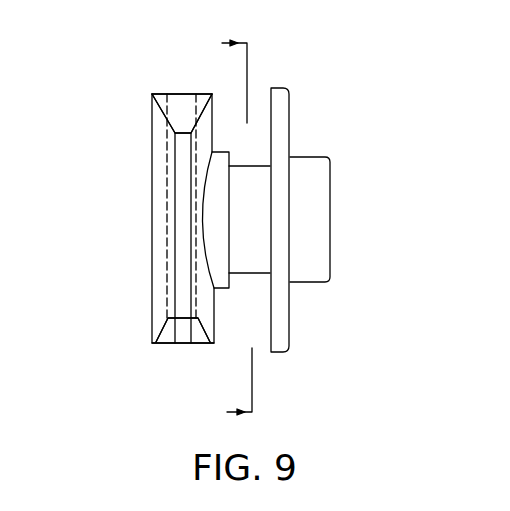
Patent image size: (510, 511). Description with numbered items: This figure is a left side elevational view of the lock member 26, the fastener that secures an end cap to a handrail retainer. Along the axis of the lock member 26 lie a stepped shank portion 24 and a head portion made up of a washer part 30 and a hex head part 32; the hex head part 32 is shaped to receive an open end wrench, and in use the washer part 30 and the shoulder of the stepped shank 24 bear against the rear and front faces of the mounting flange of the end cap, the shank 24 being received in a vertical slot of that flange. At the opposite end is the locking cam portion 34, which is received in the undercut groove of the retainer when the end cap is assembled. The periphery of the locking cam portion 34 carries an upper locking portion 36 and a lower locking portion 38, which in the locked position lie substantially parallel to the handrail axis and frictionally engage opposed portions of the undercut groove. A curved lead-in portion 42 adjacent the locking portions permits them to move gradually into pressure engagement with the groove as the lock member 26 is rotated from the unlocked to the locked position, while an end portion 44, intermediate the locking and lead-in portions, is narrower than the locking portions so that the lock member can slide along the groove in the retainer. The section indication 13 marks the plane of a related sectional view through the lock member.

The section line 13- 13 is at (223, 227).
The stepped shank portion 24 is at (250, 274).
The lock member 26 is at (127, 90).
The washer part 30 is at (291, 310).
The hex head part 32 is at (332, 198).
The locking cam portion 34 is at (154, 219).
The upper locking portion 36 is at (205, 344).
The lower locking portion 38 is at (181, 94).
The lower curved lead-in portion 42 is at (178, 119).
The left end portion 44 is at (182, 338).